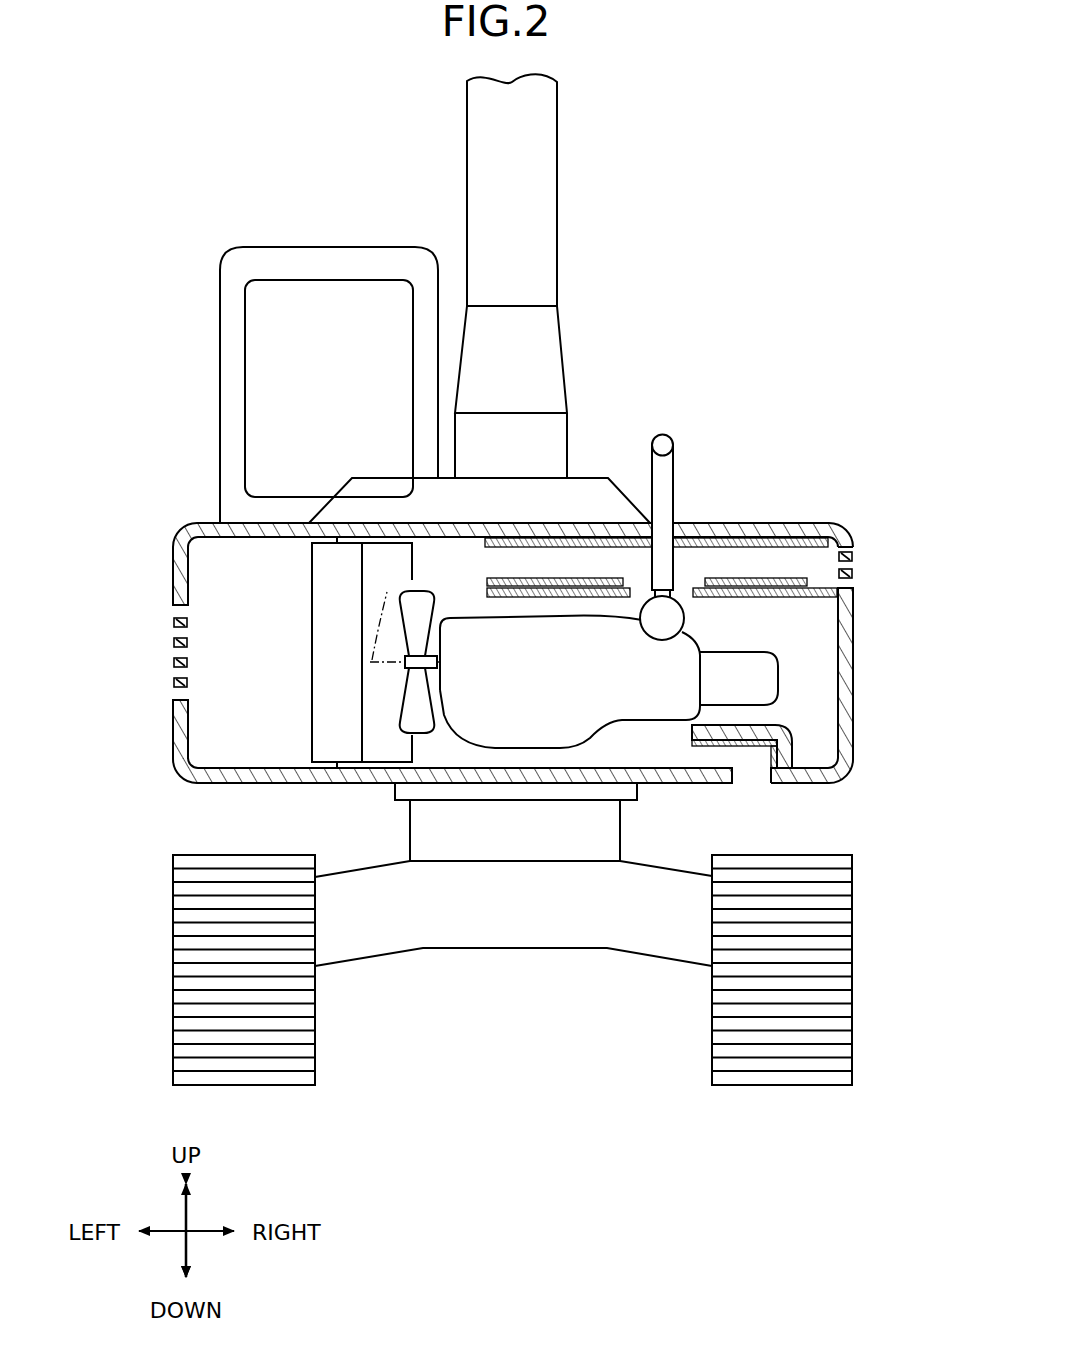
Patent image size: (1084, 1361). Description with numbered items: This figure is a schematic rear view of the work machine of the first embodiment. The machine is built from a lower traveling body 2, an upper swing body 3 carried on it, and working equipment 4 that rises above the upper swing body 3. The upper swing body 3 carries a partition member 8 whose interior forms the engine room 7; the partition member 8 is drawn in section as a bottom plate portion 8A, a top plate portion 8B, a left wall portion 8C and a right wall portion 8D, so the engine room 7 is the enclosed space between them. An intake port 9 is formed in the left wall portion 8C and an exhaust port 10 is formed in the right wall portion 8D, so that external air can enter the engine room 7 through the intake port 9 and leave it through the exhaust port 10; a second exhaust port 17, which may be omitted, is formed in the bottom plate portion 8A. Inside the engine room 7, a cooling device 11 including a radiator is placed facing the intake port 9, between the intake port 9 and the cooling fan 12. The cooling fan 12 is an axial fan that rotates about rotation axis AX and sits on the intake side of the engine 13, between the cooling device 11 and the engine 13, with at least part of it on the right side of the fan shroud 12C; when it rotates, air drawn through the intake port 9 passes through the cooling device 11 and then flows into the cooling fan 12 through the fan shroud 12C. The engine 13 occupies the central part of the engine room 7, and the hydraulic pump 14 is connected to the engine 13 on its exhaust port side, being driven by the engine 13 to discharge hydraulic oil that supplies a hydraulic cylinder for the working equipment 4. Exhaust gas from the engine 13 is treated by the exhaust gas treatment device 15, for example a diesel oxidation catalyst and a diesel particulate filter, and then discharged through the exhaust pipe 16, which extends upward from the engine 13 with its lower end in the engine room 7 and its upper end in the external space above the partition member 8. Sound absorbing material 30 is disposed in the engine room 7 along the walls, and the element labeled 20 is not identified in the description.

The lower traveling body 2 is at (856, 1032).
The upper swing body 3 is at (780, 442).
The working equipment 4 is at (558, 160).
The engine room 7 is at (811, 741).
The partition member 8 is at (840, 522).
The bottom plate portion 8A is at (222, 786).
The top plate portion 8B is at (803, 522).
The left wall portion 8C is at (173, 577).
The right wall portion 8D is at (853, 595).
The intake port 9 is at (173, 625).
The exhaust port 10 is at (857, 565).
The cooling device 11 is at (310, 732).
The cooling fan 12 is at (429, 592).
The fan shroud 12C is at (382, 765).
The engine 13 is at (665, 726).
The hydraulic pump 14 is at (750, 679).
The exhaust gas treatment device 15 is at (684, 613).
The exhaust pipe 16 is at (674, 472).
The second exhaust port 17 is at (759, 786).
The heat shield plate 20 is at (810, 598).
The sound absorbing material 30 is at (597, 578).